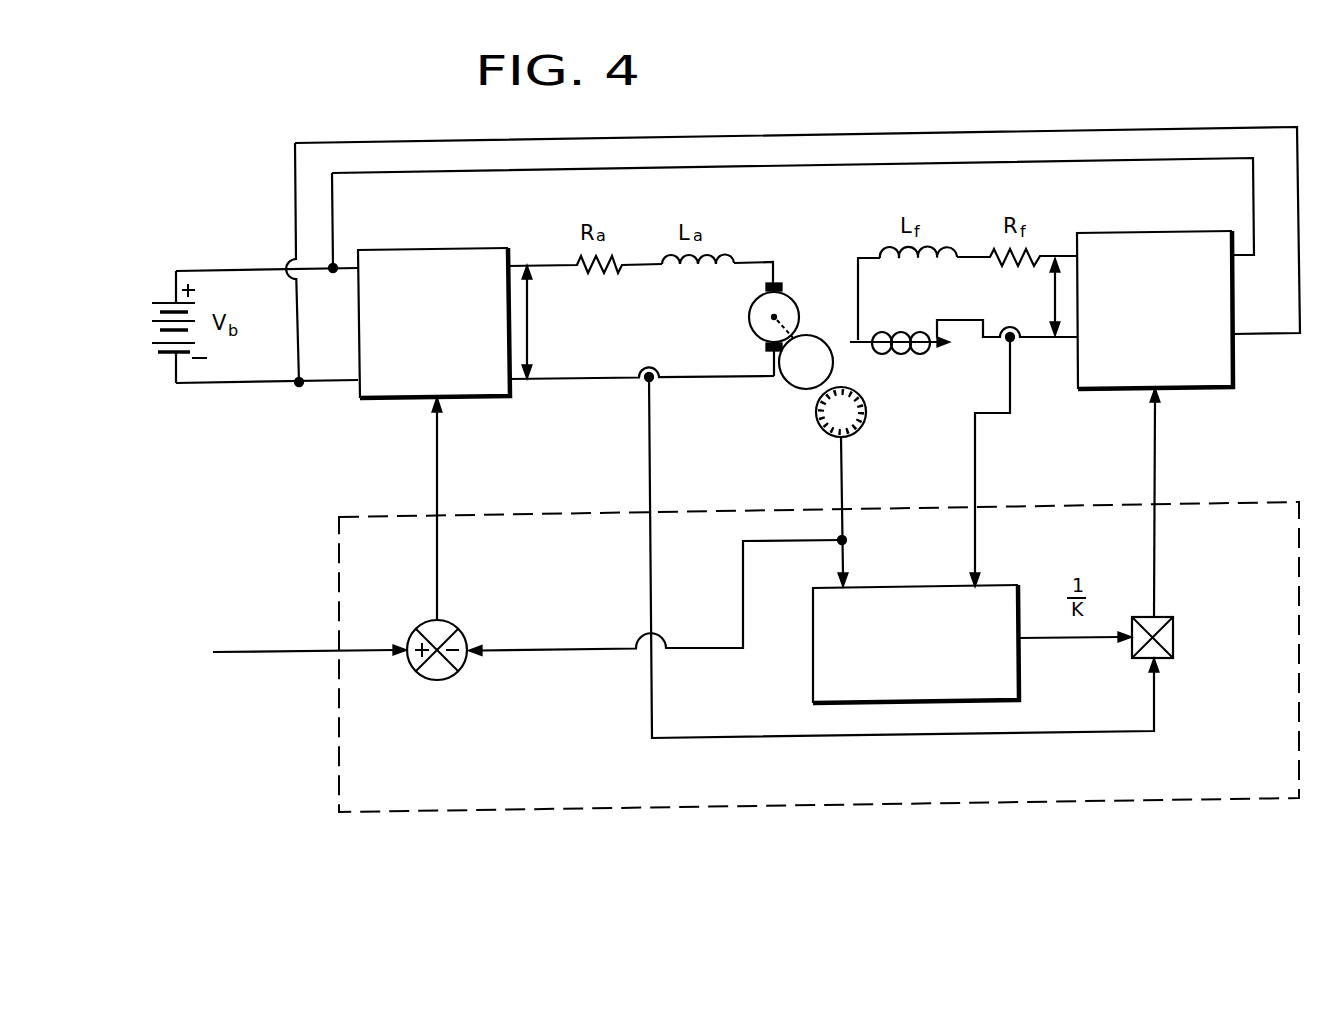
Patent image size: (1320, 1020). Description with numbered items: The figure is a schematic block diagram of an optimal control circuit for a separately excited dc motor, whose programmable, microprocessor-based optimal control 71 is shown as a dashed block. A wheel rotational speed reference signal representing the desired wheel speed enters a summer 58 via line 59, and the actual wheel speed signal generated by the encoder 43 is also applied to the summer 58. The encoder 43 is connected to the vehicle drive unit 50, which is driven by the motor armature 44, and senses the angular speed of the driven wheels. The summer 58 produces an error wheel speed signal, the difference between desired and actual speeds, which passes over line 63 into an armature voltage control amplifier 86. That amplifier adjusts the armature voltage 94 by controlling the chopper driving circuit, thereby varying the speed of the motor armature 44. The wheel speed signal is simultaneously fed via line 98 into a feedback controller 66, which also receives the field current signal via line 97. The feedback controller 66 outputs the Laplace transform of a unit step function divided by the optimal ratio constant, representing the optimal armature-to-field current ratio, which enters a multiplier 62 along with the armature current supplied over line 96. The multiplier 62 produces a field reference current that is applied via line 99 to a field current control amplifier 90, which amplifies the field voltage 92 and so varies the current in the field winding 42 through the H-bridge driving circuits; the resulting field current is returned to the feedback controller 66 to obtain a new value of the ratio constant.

The armature voltage control amplifier 86 is at (447, 383).
The armature voltage 94 is at (538, 330).
The armature winding 44 is at (740, 299).
The vehicle drive unit 50 is at (812, 336).
The encoder 43 is at (862, 427).
The field winding 42 is at (881, 332).
The field voltage 92 is at (1050, 297).
The field current control amplifier 90 is at (1171, 370).
The line 63 is at (437, 462).
The line 96 is at (653, 490).
The line 98 is at (841, 470).
The line 97 is at (975, 462).
The line 99 is at (1154, 462).
The summer 58 is at (453, 620).
The line 59 is at (280, 655).
The feedback controller 66 is at (1010, 583).
The multiplier 62 is at (1172, 614).
The optimal control 71 is at (583, 812).